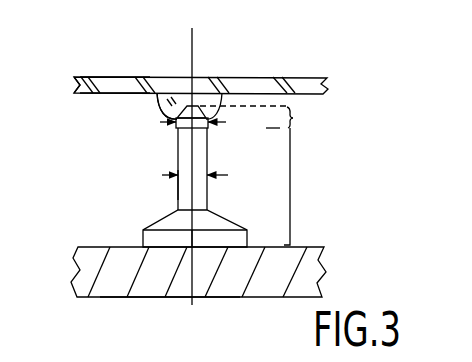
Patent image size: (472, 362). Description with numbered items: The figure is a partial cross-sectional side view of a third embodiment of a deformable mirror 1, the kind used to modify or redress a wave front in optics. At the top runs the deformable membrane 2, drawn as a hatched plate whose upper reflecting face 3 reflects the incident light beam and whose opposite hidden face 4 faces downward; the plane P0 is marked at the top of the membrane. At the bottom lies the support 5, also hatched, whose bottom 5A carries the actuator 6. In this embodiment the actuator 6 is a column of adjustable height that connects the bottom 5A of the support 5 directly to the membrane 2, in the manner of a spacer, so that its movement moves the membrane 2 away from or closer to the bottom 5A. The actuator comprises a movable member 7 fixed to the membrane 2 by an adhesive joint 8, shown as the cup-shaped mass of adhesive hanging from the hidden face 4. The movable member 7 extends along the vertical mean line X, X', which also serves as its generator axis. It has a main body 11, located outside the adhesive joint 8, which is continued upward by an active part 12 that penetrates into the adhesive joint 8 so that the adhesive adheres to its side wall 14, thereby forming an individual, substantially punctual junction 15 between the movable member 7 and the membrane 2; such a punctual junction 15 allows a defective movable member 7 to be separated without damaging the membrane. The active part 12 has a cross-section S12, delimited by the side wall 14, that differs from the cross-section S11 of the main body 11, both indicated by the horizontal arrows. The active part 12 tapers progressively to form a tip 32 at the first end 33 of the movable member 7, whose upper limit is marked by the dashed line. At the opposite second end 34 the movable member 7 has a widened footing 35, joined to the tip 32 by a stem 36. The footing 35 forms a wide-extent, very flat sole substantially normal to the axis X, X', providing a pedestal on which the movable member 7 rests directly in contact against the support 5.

The deformable mirror 1 is at (286, 70).
The deformable membrane 2 is at (76, 85).
The reflecting face 3 is at (97, 77).
The hidden face 4 is at (95, 95).
The support 5 is at (96, 261).
The bottom of the support 5A is at (140, 285).
The actuator 6 is at (156, 213).
The movable member 7 is at (188, 145).
The adhesive joint 8 is at (163, 98).
The main body 11 is at (291, 183).
The active part 12 is at (293, 118).
The side wall 14 is at (207, 101).
The junction 15 is at (155, 113).
The tip 32 is at (186, 105).
The first end 33 is at (316, 108).
The second end 34 is at (303, 224).
The widen footing 35 is at (228, 237).
The stem 36 is at (185, 188).
The mean line X is at (202, 182).
The mean line X' is at (209, 24).
The plane P0 is at (120, 76).
The cross-section of the main body S11 is at (210, 176).
The cross-section of the active part S12 is at (220, 126).